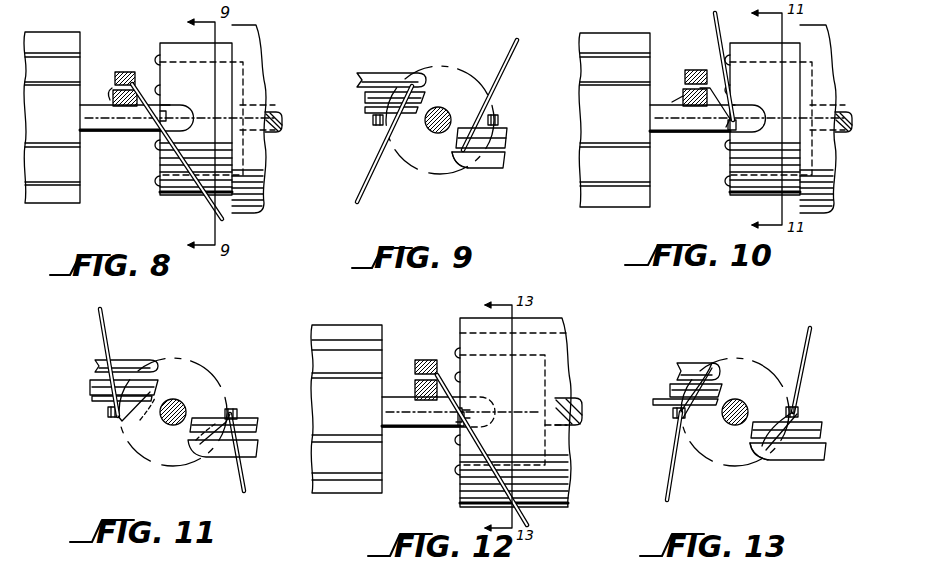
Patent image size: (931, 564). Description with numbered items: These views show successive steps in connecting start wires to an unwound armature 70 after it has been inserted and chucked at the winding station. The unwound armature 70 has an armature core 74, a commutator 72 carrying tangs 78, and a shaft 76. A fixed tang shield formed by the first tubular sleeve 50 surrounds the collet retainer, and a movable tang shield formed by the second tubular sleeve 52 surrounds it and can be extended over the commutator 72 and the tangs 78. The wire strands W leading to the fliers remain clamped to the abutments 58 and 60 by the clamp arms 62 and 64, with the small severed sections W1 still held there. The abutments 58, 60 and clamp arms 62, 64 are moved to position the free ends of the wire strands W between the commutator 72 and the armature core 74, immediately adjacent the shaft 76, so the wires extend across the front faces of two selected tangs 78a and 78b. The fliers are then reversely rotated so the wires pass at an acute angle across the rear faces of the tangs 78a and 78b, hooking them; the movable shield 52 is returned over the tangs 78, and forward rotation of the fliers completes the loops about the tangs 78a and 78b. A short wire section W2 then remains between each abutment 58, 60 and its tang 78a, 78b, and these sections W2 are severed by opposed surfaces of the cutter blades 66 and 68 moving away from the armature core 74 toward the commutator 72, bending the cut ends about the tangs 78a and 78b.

In FIG. 8, the first tubular sleeve 50 is at (180, 44).
In FIG. 10, the first tubular sleeve 50 is at (771, 119).
In FIG. 8, the second tubular sleeve 52 is at (256, 55).
In FIG. 10, the second tubular sleeve 52 is at (822, 119).
In FIG. 12, the second tubular sleeve 52 is at (545, 322).
In FIG. 8, the abutment 58 is at (106, 106).
In FIG. 9, the abutment 58 is at (368, 100).
In FIG. 10, the abutment 58 is at (747, 118).
In FIG. 11, the abutment 58 is at (124, 387).
In FIG. 12, the abutment 58 is at (461, 412).
In FIG. 13, the abutment 58 is at (672, 390).
In FIG. 9, the abutment 60 is at (508, 156).
In FIG. 11, the abutment 60 is at (223, 448).
In FIG. 13, the abutment 60 is at (816, 440).
In FIG. 8, the clamp arm 62 is at (130, 70).
In FIG. 9, the clamp arm 62 is at (380, 76).
In FIG. 10, the clamp arm 62 is at (695, 88).
In FIG. 11, the clamp arm 62 is at (126, 366).
In FIG. 12, the clamp arm 62 is at (430, 360).
In FIG. 13, the clamp arm 62 is at (692, 364).
In FIG. 9, the clamp arm 64 is at (500, 168).
In FIG. 13, the clamp arm 64 is at (800, 460).
In FIG. 9, the cutter blade 66 is at (372, 114).
In FIG. 11, the cutter blade 66 is at (122, 398).
In FIG. 13, the cutter blade 66 is at (670, 408).
In FIG. 9, the cutter blade 68 is at (504, 132).
In FIG. 11, the cutter blade 68 is at (224, 425).
In FIG. 13, the cutter blade 68 is at (806, 422).
In FIG. 8, the unwound armature 70 is at (72, 29).
In FIG. 8, the commutator 72 is at (238, 82).
In FIG. 9, the commutator 72 is at (466, 80).
In FIG. 11, the commutator 72 is at (173, 412).
In FIG. 13, the commutator 72 is at (735, 412).
In FIG. 8, the armature core 74 is at (60, 34).
In FIG. 10, the armature core 74 is at (614, 120).
In FIG. 12, the armature core 74 is at (346, 409).
In FIG. 8, the shaft 76 is at (282, 124).
In FIG. 9, the shaft 76 is at (446, 114).
In FIG. 10, the shaft 76 is at (843, 122).
In FIG. 11, the shaft 76 is at (173, 412).
In FIG. 12, the shaft 76 is at (568, 400).
In FIG. 13, the shaft 76 is at (735, 412).
In FIG. 8, the tang 78 is at (156, 58).
In FIG. 10, the tang 78 is at (727, 120).
In FIG. 12, the tang 78 is at (457, 411).
In FIG. 8, the selected tang 78a is at (165, 106).
In FIG. 9, the selected tang 78a is at (372, 126).
In FIG. 10, the selected tang 78a is at (728, 132).
In FIG. 11, the selected tang 78a is at (108, 414).
In FIG. 12, the selected tang 78a is at (456, 432).
In FIG. 13, the selected tang 78a is at (674, 420).
In FIG. 9, the selected tang 78b is at (498, 116).
In FIG. 11, the selected tang 78b is at (236, 406).
In FIG. 13, the selected tang 78b is at (798, 408).
In FIG. 8, the wire strand W is at (210, 204).
In FIG. 9, the wire strand W is at (362, 186).
In FIG. 10, the wire strand W is at (712, 28).
In FIG. 11, the wire strand W is at (108, 332).
In FIG. 12, the wire strand W is at (528, 522).
In FIG. 13, the wire strand W is at (666, 468).
In FIG. 8, the wire section W1 is at (110, 90).
In FIG. 10, the wire section W1 is at (677, 99).
In FIG. 12, the wire section W1 is at (412, 390).
In FIG. 10, the wire section W2 is at (722, 96).
In FIG. 11, the wire section W2 is at (122, 420).
In FIG. 12, the wire section W2 is at (458, 394).
In FIG. 13, the wire section W2 is at (692, 416).